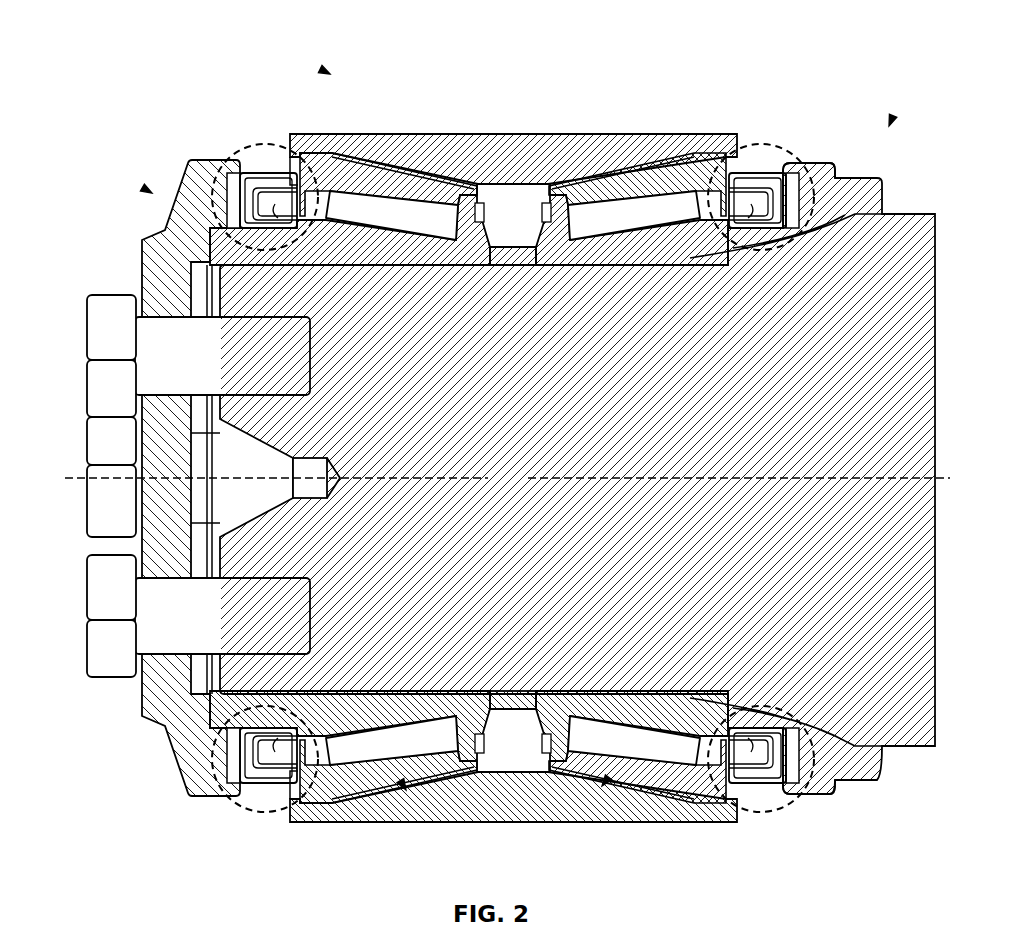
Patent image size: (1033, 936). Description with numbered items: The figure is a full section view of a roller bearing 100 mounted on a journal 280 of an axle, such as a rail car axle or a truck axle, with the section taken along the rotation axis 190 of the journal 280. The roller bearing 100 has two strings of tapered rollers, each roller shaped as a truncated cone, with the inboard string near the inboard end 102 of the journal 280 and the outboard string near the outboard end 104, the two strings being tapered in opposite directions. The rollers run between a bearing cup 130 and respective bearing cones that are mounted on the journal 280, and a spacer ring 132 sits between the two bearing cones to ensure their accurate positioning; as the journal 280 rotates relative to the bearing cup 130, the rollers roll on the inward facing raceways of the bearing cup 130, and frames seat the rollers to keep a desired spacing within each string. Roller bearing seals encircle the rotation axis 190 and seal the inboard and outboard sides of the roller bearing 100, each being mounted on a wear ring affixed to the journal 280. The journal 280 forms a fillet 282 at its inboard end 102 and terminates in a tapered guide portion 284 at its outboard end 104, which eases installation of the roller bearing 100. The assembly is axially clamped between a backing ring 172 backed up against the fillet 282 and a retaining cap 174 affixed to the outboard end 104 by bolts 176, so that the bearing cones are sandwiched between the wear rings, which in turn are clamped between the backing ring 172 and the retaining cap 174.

The roller bearing 100 is at (322, 70).
The inboard end 102 is at (893, 116).
The outboard end 104 is at (143, 188).
The bearing cup 130 is at (500, 165).
The spacer ring 132 is at (517, 240).
The backing ring 172 is at (836, 193).
The retaining cap 174 is at (205, 229).
The bolts 176 is at (88, 354).
The rotation axis 190 is at (507, 478).
The journal 280 is at (591, 415).
The fillet 282 is at (883, 199).
The tapered guide portion 284 is at (212, 258).